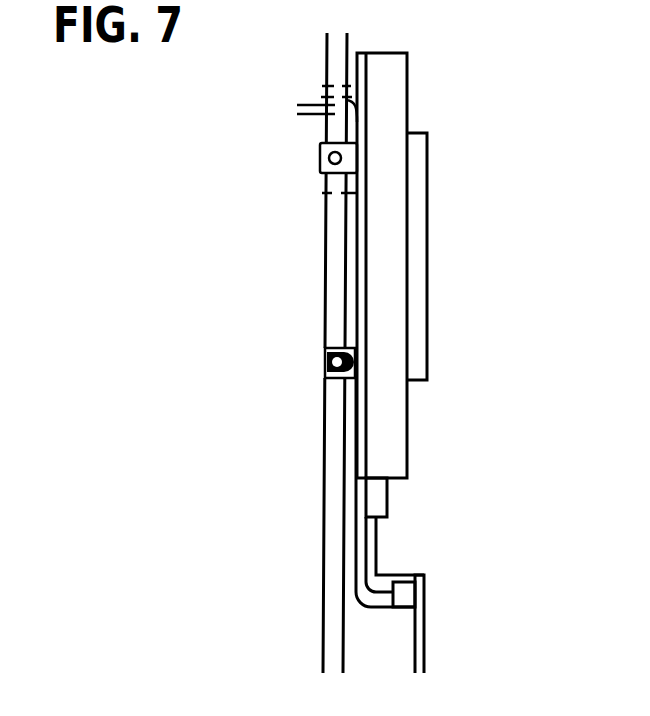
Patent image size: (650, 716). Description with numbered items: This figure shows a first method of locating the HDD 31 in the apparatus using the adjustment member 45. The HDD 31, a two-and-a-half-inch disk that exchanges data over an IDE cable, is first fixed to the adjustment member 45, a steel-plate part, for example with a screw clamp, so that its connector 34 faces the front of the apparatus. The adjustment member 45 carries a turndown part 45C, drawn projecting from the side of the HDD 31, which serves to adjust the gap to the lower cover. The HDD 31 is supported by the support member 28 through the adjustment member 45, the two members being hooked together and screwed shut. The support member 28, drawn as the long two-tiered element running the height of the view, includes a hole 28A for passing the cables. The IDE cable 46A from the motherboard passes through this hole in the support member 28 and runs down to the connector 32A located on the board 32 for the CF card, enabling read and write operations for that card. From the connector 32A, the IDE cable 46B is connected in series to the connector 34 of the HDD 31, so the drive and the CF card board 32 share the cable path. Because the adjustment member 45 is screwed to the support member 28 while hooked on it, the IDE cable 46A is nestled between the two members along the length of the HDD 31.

The support member 28 is at (327, 52).
The hole 28A is at (327, 97).
The HDD 31 is at (403, 98).
The adjustment member 45 is at (362, 73).
The turndown part 45C is at (423, 252).
The IDE cable 46A is at (350, 263).
The connector 34 is at (380, 497).
The IDE cable 46B is at (372, 542).
The connector 32A is at (405, 596).
The board 32 is at (422, 635).